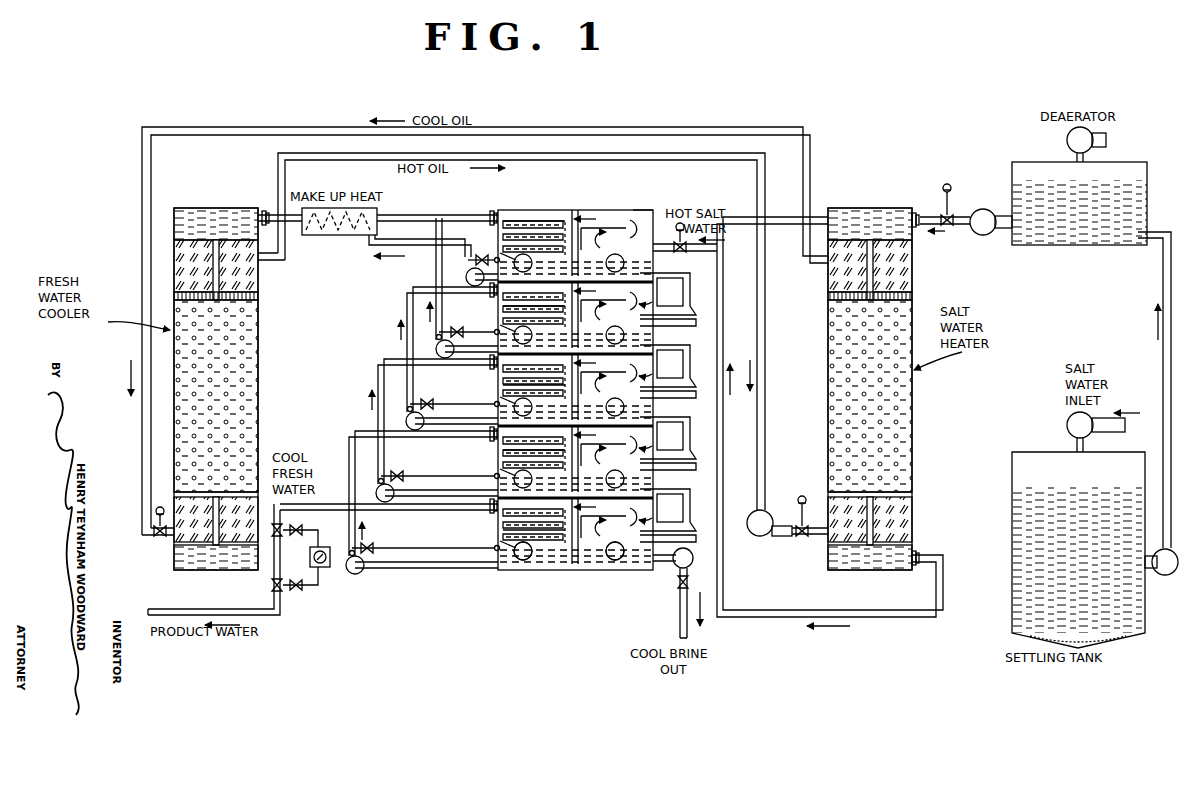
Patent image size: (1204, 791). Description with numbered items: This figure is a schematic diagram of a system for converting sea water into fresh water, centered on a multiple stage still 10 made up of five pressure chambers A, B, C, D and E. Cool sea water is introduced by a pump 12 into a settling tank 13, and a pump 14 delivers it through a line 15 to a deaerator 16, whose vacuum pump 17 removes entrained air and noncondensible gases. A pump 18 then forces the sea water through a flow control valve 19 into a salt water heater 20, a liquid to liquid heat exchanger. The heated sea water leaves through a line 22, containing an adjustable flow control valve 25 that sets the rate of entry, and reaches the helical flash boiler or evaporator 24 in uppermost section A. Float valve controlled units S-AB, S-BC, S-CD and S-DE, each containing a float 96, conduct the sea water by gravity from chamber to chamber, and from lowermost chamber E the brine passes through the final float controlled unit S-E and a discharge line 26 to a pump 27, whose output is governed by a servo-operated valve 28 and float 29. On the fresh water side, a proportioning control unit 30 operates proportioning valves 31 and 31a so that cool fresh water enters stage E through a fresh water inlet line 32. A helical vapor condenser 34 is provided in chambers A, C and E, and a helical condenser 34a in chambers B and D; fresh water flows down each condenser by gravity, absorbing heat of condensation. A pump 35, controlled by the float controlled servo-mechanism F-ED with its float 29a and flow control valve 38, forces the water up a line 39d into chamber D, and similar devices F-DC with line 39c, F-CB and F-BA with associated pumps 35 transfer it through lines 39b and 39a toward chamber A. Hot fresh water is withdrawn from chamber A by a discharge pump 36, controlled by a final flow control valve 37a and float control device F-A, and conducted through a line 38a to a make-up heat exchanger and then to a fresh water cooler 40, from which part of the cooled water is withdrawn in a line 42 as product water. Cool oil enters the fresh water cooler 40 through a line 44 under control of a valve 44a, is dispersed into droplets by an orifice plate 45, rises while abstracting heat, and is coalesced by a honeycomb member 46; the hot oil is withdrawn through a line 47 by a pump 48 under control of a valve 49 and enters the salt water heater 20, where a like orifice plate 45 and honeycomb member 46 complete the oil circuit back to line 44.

The still 10 is at (575, 334).
The pump 12 is at (1064, 422).
The settling tank 13 is at (1012, 454).
The pump 14 is at (1165, 577).
The line 15 is at (1162, 279).
The deaerator 16 is at (1134, 240).
The vacuum pump 17 is at (1066, 140).
The pump 18 is at (985, 234).
The flow control valve 19 is at (945, 184).
The salt water heater 20 is at (912, 394).
The line 22 is at (850, 615).
The helical flash boiler or evaporator 24 is at (697, 320).
The adjustable flow control valve 25 is at (682, 253).
The discharge line 26 is at (676, 619).
The pump 27 is at (694, 572).
The servo-operated valve 28 is at (678, 586).
The float 29 is at (615, 561).
The float 29a is at (524, 560).
The proportioning control unit 30 is at (330, 570).
The proportioning valve 31 is at (284, 530).
The proportioning valve 31a is at (284, 587).
The fresh water inlet line 32 is at (454, 504).
The helical vapor condenser 34 is at (514, 222).
The helical condenser 34a is at (500, 318).
The pump 35 is at (407, 407).
The discharge pump 36 is at (468, 270).
The final flow control valve 37a is at (482, 255).
The flow control valve 38 is at (400, 568).
The line 38a is at (368, 247).
The fresh water return pipe 39a is at (440, 215).
The fresh water return pipe 39b is at (406, 310).
The line 39c is at (377, 383).
The line 39d is at (347, 440).
The fresh water cooler 40 is at (170, 245).
The line 42 is at (214, 610).
The line 44 is at (739, 127).
The valve 44a is at (155, 535).
The orifice plate 45 is at (174, 492).
The honeycomb member 46 is at (258, 294).
The line 47 is at (280, 156).
The pump 48 is at (768, 538).
The valve 49 is at (802, 539).
The float 96 is at (560, 200).
The stage or pressure chamber A is at (652, 208).
The stage or pressure chamber B is at (670, 292).
The stage or pressure chamber C is at (670, 364).
The stage or pressure chamber D is at (670, 436).
The stage or pressure chamber E is at (670, 508).
The float valve controlled unit S-AB is at (722, 294).
The float controlled inter-connecting unit S-BC is at (721, 366).
The float controlled inter-connecting unit S-CD is at (722, 438).
The float controlled inter-connecting unit S-DE is at (722, 506).
The final float controlled unit S-E is at (694, 553).
The float control device F-A is at (429, 273).
The float controlled device F-BA is at (436, 350).
The float controlled device F-CB is at (406, 425).
The float controlled mechanism F-DC is at (388, 503).
The float controlled servo-mechanism F-ED is at (423, 568).